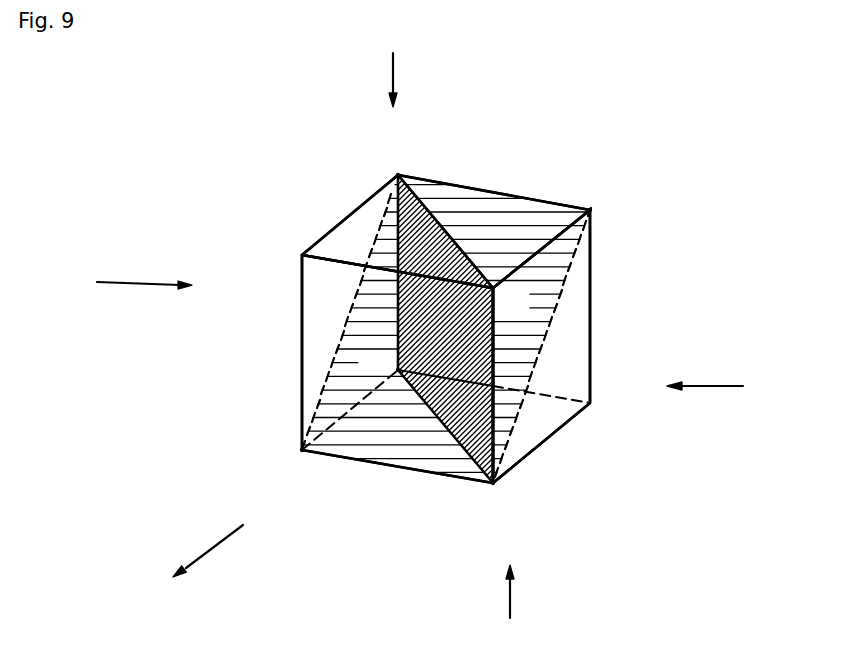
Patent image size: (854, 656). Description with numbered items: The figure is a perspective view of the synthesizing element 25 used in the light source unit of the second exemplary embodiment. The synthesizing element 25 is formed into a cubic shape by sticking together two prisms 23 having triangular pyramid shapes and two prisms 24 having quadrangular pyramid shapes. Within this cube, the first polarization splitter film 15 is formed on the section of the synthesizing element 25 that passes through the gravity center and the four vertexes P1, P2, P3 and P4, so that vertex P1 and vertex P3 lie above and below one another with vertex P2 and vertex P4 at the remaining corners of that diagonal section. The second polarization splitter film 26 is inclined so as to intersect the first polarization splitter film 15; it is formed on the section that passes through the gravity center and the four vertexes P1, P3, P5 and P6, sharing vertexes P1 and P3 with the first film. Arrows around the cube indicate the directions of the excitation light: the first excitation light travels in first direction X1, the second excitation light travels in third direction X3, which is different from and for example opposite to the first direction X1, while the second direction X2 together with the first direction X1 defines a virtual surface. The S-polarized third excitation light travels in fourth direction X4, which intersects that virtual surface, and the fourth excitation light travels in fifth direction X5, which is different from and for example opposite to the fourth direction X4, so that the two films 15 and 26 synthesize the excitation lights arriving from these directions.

The polarization splitter film 15 is at (392, 222).
The prisms having triangular pyramid shapes 23 is at (455, 195).
The prisms having quadrangular pyramid shapes 24 is at (318, 288).
The synthesizing element 25 is at (614, 154).
The second polarization splitter film 26 is at (372, 307).
The vertex P1 is at (398, 159).
The vertex P2 is at (509, 300).
The vertex P3 is at (508, 497).
The vertex P4 is at (381, 360).
The vertex P5 is at (607, 199).
The vertex P6 is at (288, 464).
The first direction X1 is at (123, 285).
The second direction X2 is at (217, 548).
The third direction X3 is at (718, 390).
The fourth direction X4 is at (390, 72).
The fifth direction X5 is at (512, 604).